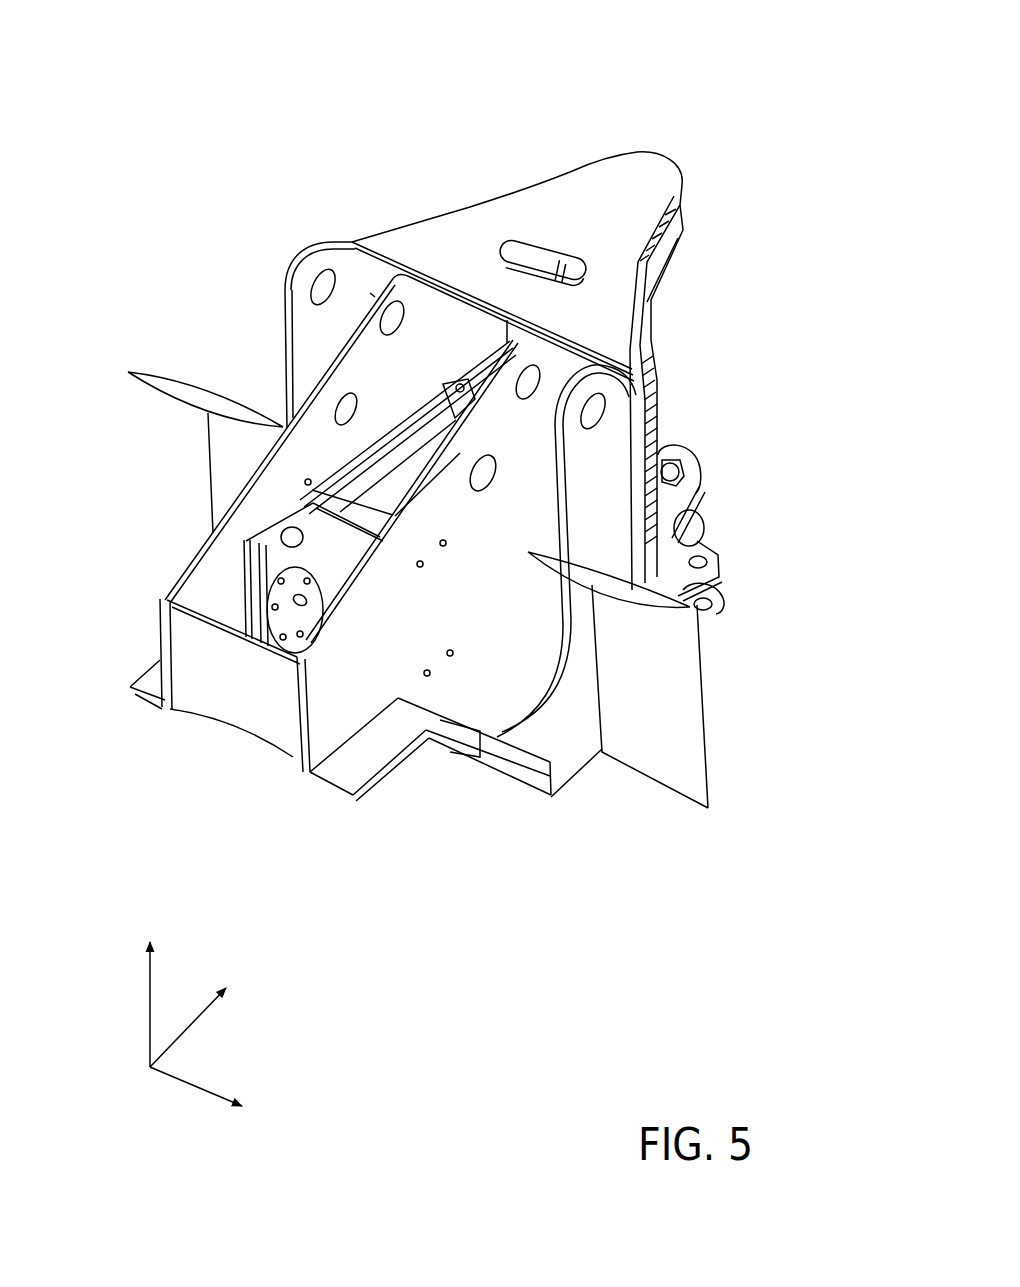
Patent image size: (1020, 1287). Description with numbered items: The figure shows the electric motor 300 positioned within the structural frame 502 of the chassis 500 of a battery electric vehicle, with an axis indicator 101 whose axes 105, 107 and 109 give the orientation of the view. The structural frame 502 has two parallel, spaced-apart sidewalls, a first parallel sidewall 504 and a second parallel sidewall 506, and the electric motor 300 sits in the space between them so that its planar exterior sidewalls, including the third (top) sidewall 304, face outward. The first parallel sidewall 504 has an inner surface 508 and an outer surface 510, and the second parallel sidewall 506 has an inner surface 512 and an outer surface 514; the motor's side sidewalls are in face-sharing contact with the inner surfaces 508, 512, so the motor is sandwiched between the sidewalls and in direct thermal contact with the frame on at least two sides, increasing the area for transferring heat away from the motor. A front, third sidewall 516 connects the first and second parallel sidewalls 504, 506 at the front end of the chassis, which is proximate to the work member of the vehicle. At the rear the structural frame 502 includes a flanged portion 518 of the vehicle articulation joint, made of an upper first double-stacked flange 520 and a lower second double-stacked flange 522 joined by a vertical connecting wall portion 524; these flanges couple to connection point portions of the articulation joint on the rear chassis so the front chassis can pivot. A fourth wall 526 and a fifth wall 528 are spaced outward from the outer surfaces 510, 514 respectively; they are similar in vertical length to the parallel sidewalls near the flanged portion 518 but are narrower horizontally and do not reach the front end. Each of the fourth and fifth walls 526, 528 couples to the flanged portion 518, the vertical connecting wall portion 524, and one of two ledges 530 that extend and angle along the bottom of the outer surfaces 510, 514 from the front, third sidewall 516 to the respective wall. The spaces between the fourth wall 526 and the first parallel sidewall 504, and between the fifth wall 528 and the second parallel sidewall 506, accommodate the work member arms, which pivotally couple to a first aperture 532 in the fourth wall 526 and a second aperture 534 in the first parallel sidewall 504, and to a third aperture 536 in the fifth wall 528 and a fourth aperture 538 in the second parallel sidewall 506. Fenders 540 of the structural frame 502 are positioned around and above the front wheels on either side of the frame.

The chassis 500 is at (667, 52).
The structural frame 502 is at (207, 249).
The first parallel sidewall 504 is at (357, 360).
The second parallel sidewall 506 is at (397, 632).
The inner surface 508 is at (203, 580).
The outer surface 510 is at (158, 617).
The inner surface 512 is at (290, 657).
The outer surface 514 is at (311, 771).
The front, third sidewall 516 is at (237, 680).
The flanged portion 518 is at (702, 377).
The first double-stacked flange 520 is at (597, 185).
The second double-stacked flange 522 is at (699, 541).
The vertical connecting wall portion 524 is at (675, 460).
The fourth wall 526 is at (352, 288).
The fifth wall 528 is at (685, 503).
The ledges 530 is at (130, 688).
The first aperture 532 is at (313, 285).
The second aperture 534 is at (413, 300).
The third aperture 536 is at (603, 409).
The fourth aperture 538 is at (525, 400).
The fenders 540 is at (197, 388).
The electric motor 300 is at (308, 502).
The third (top) sidewall 304 is at (428, 440).
The coordinate system 101 is at (277, 797).
The vertical axis 105 is at (147, 1018).
The lateral axis 107 is at (165, 1078).
The longitudinal axis 109 is at (193, 1018).